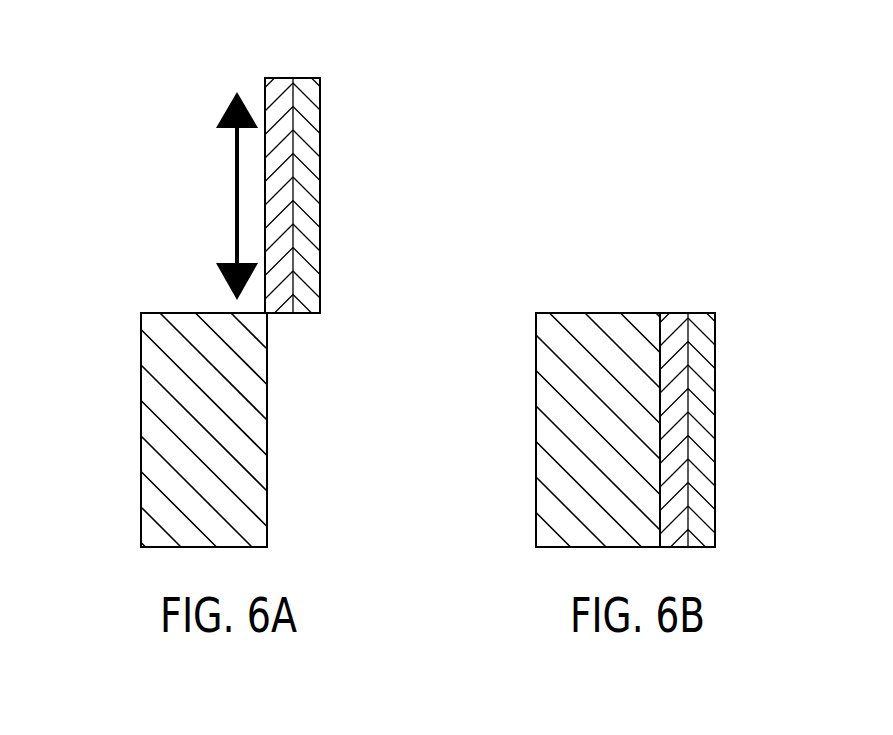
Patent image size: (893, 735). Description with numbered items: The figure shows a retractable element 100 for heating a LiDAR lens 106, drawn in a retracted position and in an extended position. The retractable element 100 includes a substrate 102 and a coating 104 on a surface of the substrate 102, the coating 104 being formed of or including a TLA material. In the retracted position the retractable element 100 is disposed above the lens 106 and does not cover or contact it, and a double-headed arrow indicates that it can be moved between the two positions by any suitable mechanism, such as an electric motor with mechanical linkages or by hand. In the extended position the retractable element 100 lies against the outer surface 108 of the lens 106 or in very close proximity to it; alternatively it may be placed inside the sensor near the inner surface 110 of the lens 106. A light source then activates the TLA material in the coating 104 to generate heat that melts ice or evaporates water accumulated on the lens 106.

In FIG. 6A, the retractable element 100 is at (108, 152).
In FIG. 6B, the retractable element 100 is at (665, 338).
In FIG. 6A, the substrate 102 is at (312, 160).
In FIG. 6A, the coating 104 is at (278, 88).
In FIG. 6A, the LiDAR lens 106 is at (153, 343).
In FIG. 6B, the LiDAR lens 106 is at (550, 323).
In FIG. 6A, the outer surface 108 is at (268, 395).
In FIG. 6A, the inner surface 110 is at (145, 424).
In FIG. 6B, the inner surface 110 is at (537, 425).